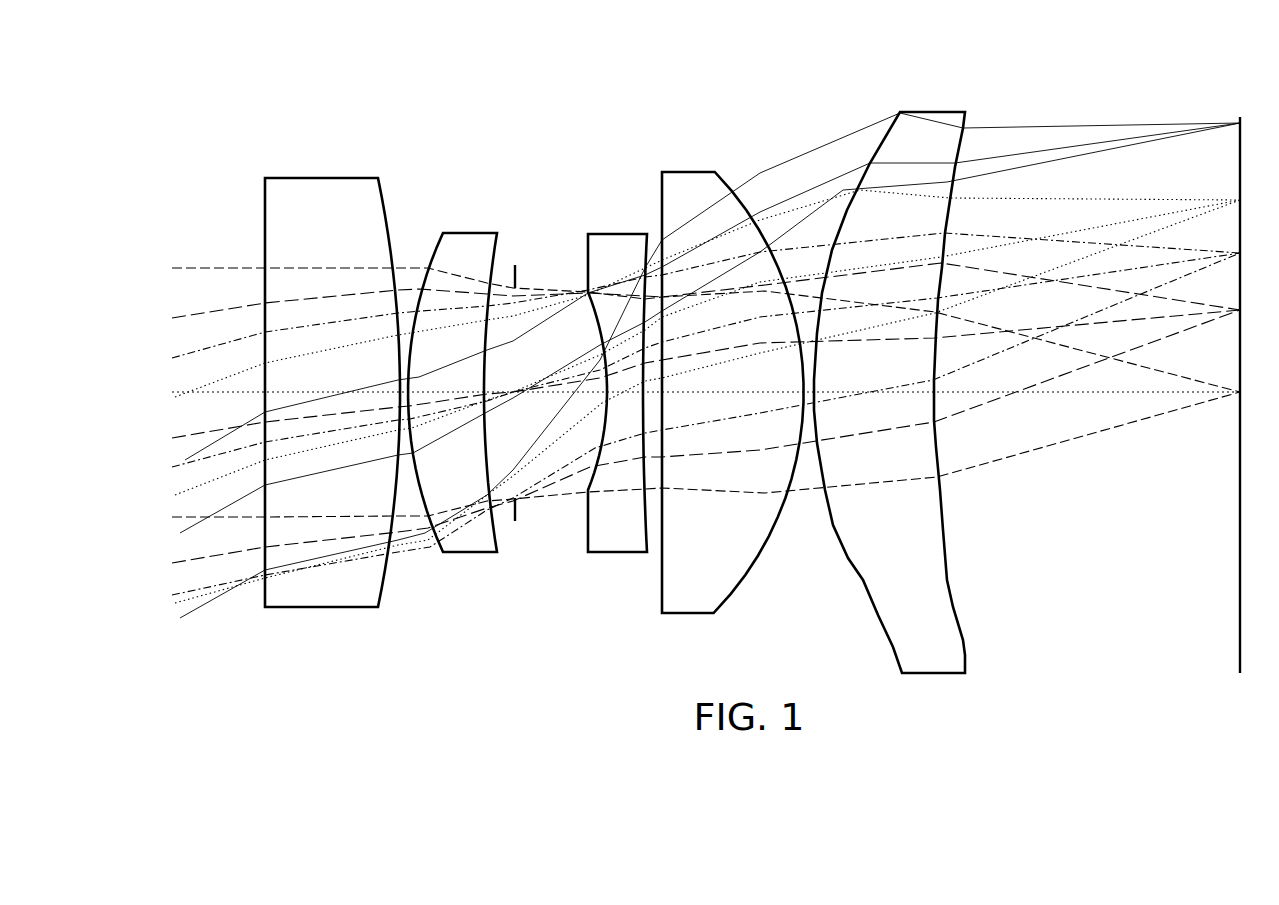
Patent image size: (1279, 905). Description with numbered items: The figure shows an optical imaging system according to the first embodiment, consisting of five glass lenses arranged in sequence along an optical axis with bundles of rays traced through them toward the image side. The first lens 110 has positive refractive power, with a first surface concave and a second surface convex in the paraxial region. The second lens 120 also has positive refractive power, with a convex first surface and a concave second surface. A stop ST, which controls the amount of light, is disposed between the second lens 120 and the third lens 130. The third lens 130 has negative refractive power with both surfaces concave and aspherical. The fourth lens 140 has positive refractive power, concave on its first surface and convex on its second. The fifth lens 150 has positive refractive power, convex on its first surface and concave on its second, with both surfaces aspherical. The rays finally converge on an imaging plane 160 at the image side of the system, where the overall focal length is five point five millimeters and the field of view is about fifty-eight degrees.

The first lens 110 is at (322, 178).
The second lens 120 is at (470, 233).
The third lens 130 is at (618, 234).
The fourth lens 140 is at (690, 172).
The fifth lens 150 is at (933, 112).
The image sensor / imaging plane 160 is at (1242, 129).
The stop ST is at (516, 510).